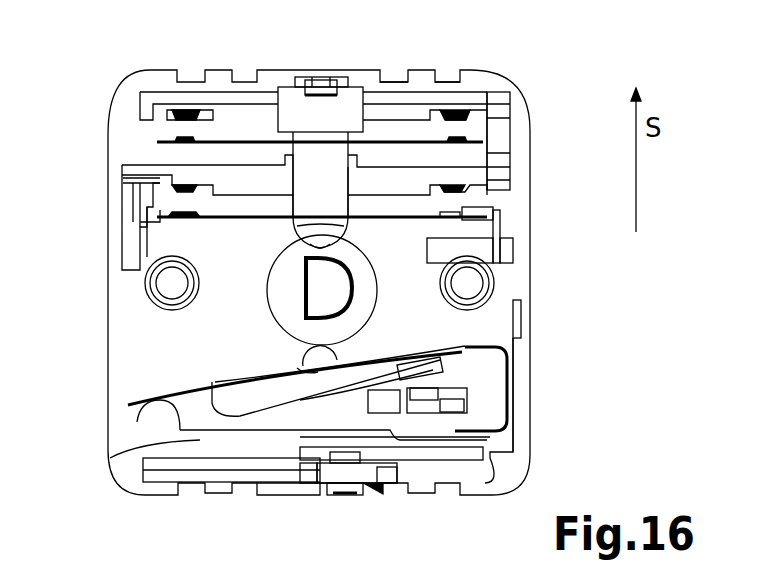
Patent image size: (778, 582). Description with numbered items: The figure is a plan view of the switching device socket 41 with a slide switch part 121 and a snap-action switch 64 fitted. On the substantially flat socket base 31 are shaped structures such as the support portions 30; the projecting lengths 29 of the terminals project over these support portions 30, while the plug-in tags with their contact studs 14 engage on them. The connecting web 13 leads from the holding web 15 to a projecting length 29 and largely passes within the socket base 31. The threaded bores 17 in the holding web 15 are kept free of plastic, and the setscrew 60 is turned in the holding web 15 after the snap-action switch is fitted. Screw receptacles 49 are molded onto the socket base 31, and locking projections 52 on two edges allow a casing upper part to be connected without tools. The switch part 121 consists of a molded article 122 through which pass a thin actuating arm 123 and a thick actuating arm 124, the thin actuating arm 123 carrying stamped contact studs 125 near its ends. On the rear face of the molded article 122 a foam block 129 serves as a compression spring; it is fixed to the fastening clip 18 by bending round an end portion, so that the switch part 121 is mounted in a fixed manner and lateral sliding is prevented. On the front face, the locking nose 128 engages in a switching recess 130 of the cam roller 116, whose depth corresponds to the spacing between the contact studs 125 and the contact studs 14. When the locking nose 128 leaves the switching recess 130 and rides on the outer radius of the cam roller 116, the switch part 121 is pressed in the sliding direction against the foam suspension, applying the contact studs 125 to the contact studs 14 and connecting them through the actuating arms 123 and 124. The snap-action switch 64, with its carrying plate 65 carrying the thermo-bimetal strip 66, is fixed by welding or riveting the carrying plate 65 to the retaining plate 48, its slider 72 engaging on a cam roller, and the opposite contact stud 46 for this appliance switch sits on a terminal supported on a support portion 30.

The connecting web 13 is at (82, 224).
The contact studs 14 is at (356, 118).
The holding web 15 is at (370, 496).
The threaded bores 17 is at (383, 518).
The fastening clip 18 is at (321, 62).
The projecting lengths 29 is at (264, 186).
The support portions 30 is at (319, 82).
The socket base 31 is at (282, 312).
The switching device socket 41 is at (282, 262).
The opposite contact stud 46 is at (432, 391).
The retaining plate 48 is at (543, 376).
The screw receptacles 49 is at (318, 278).
The locking projections 52 is at (321, 288).
The setscrew 60 is at (344, 501).
The snap-action switch 64 is at (296, 388).
The carrying plate 65 is at (515, 379).
The thermo-bimetal strip 66 is at (271, 463).
The slider 72 is at (370, 342).
The cam roller 116 is at (295, 290).
The switch part 121 is at (276, 121).
The molded article 122 is at (311, 81).
The thin actuating arm 123 is at (255, 127).
The thick actuating arm 124 is at (94, 257).
The contact studs 125 is at (535, 141).
The locking nose 128 is at (270, 238).
The foam block 129 is at (247, 142).
The switching recess 130 is at (362, 244).